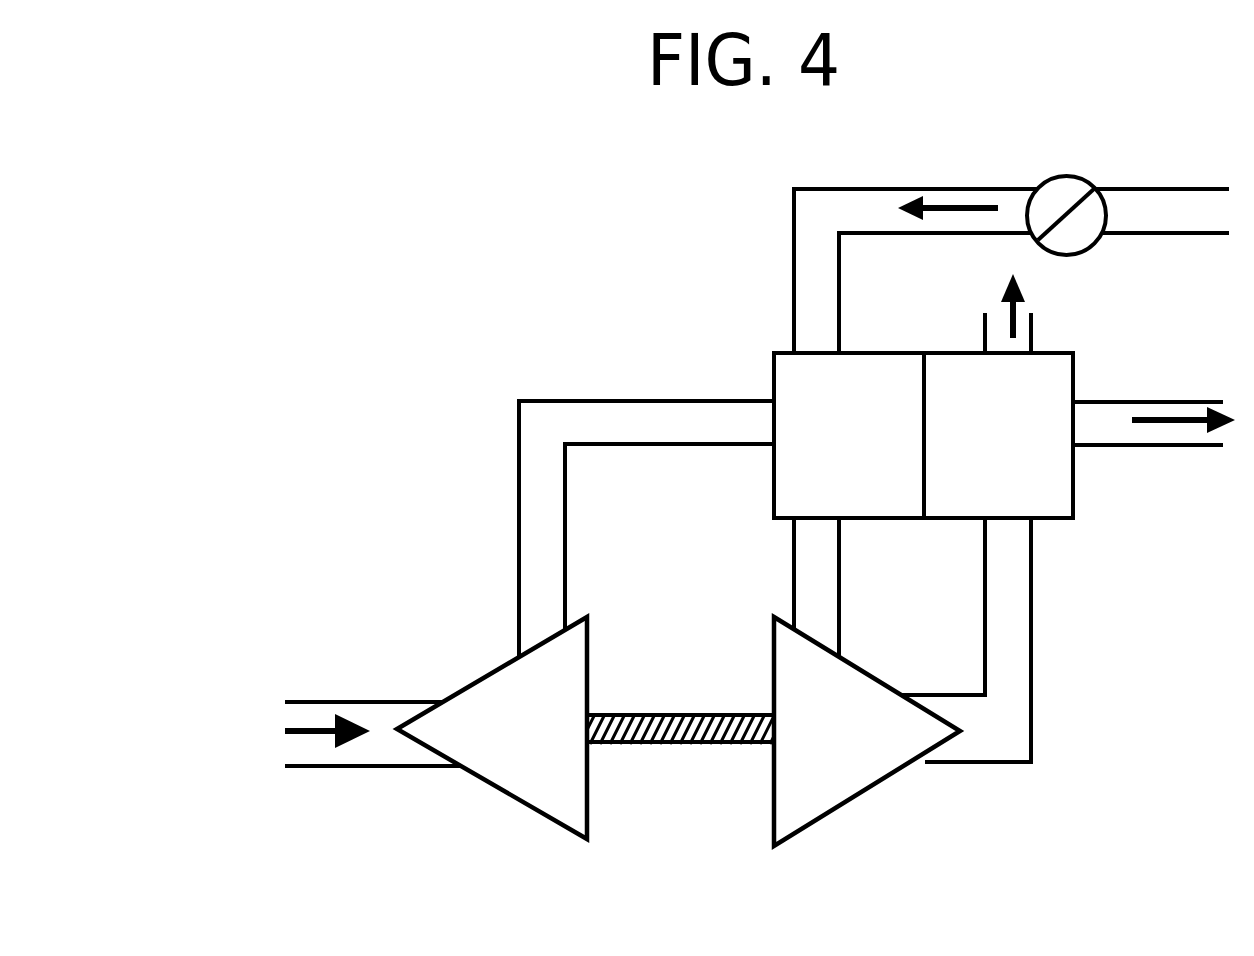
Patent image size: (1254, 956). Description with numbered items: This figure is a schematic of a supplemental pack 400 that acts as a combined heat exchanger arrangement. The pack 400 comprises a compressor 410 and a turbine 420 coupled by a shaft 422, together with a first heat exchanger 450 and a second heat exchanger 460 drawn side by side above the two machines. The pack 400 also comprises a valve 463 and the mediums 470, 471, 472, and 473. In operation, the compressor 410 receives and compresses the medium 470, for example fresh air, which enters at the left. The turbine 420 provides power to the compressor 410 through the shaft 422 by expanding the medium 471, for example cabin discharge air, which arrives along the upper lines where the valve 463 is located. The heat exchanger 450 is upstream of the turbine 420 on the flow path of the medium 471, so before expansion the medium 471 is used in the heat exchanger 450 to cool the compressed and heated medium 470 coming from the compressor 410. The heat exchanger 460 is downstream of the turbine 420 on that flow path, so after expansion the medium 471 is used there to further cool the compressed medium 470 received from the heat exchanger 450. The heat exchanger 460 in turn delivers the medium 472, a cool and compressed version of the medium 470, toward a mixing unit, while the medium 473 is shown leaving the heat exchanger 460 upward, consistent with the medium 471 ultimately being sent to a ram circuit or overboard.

The pack 400 is at (284, 132).
The compressor 410 is at (562, 749).
The turbine 420 is at (852, 749).
The shaft 422 is at (717, 713).
The heat exchanger 450 is at (875, 454).
The heat exchanger 460 is at (1025, 454).
The valve 463 is at (1082, 175).
The medium 470 is at (296, 731).
The medium 471 is at (926, 204).
The medium 472 is at (1165, 415).
The medium 473 is at (1018, 308).